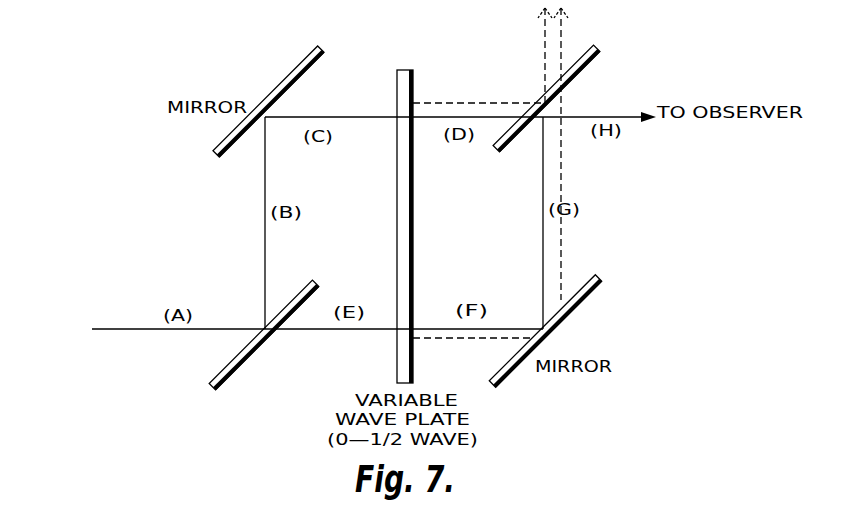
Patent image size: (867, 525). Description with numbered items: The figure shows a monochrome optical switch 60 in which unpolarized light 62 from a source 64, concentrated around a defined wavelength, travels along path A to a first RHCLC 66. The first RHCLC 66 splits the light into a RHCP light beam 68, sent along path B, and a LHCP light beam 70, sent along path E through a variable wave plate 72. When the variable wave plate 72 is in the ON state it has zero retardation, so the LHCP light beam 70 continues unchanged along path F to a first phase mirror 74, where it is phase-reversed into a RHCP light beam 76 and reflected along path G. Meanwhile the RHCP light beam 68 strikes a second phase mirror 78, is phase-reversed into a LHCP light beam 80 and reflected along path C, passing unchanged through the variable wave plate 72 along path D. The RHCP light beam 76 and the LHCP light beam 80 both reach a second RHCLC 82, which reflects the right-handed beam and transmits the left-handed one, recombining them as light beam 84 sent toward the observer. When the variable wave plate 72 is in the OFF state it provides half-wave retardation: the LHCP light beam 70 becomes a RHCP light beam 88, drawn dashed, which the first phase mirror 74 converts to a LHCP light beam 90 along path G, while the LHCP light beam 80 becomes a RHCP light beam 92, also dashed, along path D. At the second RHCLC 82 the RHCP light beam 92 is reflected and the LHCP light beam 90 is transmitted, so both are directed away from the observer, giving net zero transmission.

The monochrome optical switch 60 is at (423, 52).
The unpolarized light 62 is at (178, 308).
The source 64 is at (42, 314).
The first RHCLC 66 is at (228, 373).
The RHCP light beam 68 is at (265, 205).
The LHCP light beam 70 is at (337, 329).
The variable wave plate 72 is at (413, 204).
The first phase mirror 74 is at (574, 312).
The RHCP light beam 76 is at (543, 235).
The second phase mirror 78 is at (288, 68).
The LHCP light beam 80 is at (364, 118).
The second RHCLC 82 is at (586, 70).
The light beam 84 is at (640, 119).
The RHCP light beam 88 is at (484, 341).
The LHCP light beam 90 is at (563, 32).
The RHCP light beam 92 is at (545, 34).